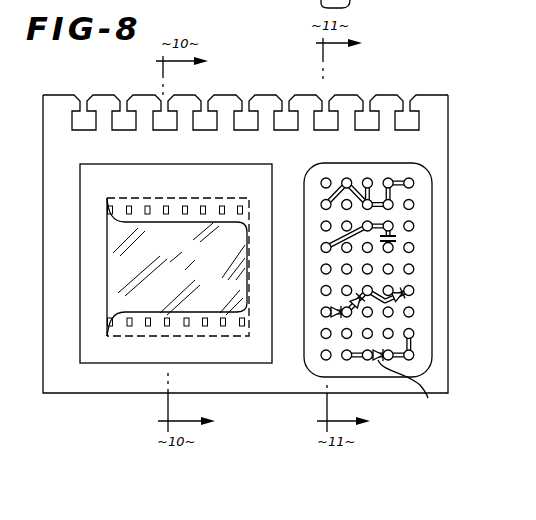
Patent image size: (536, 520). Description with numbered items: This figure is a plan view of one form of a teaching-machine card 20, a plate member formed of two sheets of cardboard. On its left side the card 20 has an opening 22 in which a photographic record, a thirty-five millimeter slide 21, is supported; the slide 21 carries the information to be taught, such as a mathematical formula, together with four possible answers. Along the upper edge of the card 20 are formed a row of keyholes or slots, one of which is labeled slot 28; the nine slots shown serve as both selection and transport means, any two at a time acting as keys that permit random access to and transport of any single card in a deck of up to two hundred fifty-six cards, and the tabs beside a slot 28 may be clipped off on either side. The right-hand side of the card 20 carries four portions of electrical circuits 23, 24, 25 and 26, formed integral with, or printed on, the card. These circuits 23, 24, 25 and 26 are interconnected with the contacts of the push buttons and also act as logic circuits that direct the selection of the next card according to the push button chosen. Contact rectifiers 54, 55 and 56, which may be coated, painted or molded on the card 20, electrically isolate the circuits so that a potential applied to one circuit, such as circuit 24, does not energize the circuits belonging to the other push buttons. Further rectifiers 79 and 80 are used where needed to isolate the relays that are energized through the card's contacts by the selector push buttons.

The card 20 is at (456, 131).
The slide 21 is at (177, 267).
The opening 22 is at (207, 307).
The electrical circuit 23 is at (426, 195).
The electrical circuit 24 is at (402, 226).
The electrical circuit 25 is at (380, 287).
The electrical circuit 26 is at (428, 342).
The slot 28 is at (84, 107).
The contact rectifier 54 is at (391, 231).
The contact rectifier 55 is at (402, 287).
The contact rectifier 56 is at (411, 387).
The rectifier 79 is at (353, 300).
The rectifier 80 is at (333, 315).